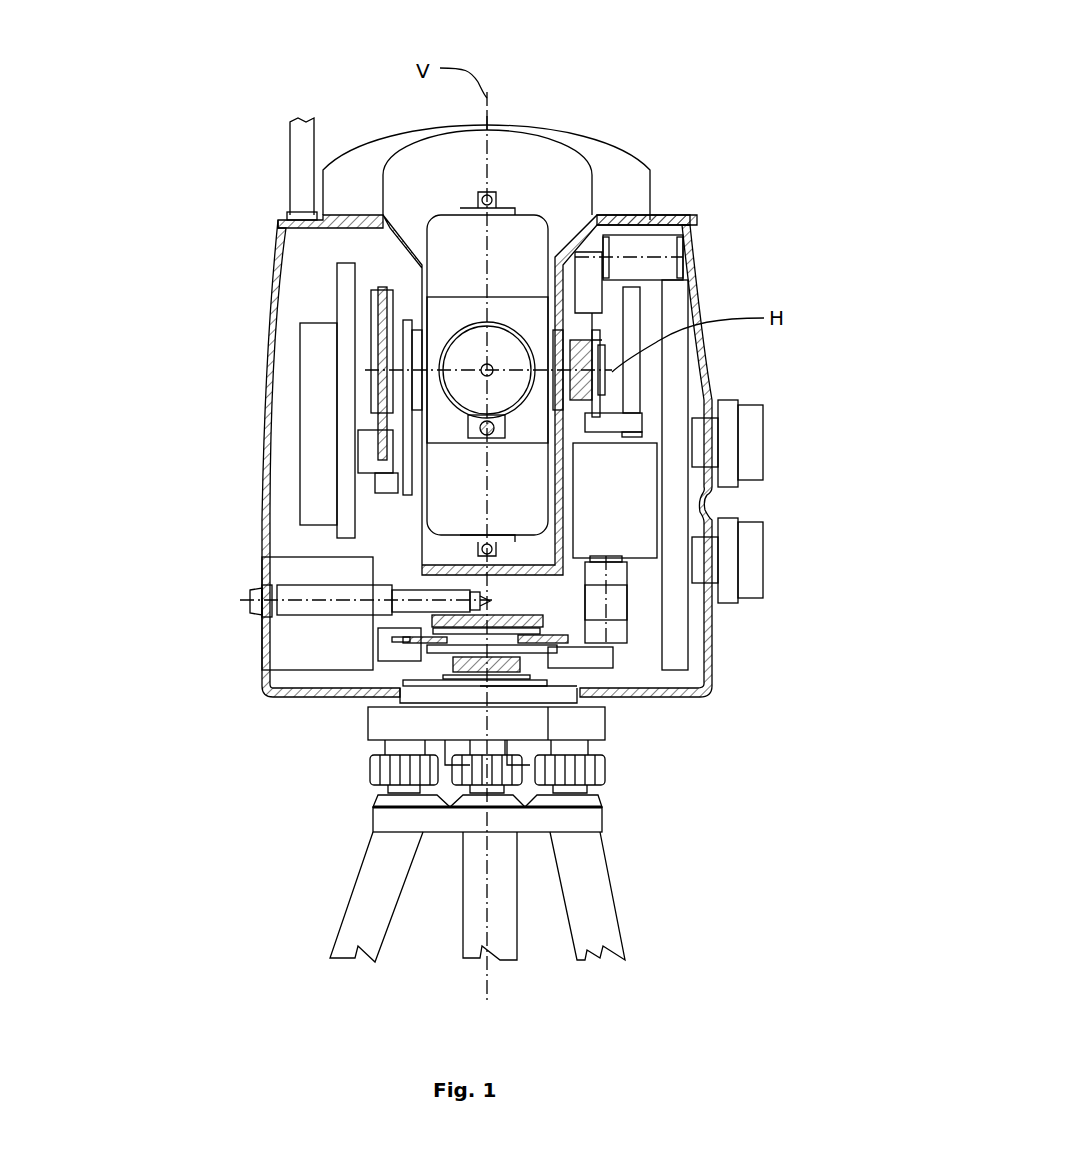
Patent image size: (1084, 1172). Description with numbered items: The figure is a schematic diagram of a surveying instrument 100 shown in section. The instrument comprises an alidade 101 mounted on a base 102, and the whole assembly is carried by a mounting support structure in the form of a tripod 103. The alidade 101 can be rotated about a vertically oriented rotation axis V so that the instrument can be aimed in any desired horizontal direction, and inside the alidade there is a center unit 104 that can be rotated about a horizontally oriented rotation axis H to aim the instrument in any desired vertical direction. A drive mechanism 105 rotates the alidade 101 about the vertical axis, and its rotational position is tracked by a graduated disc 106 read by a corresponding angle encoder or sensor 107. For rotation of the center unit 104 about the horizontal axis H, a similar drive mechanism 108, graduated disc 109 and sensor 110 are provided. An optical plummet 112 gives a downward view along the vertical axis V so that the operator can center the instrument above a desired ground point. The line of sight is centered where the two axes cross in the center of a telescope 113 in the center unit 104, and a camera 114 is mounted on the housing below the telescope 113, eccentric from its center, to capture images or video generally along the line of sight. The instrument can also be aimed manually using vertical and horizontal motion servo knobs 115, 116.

The surveying instrument 100 is at (683, 118).
The alidade 101 is at (712, 698).
The base 102 is at (587, 722).
The tripod 103 is at (585, 878).
The center unit 104 is at (523, 248).
The drive mechanism 105 is at (620, 622).
The graduated disc 106 is at (433, 648).
The angle encoder or sensor 107 is at (385, 655).
The drive mechanism 108 is at (673, 234).
The graduated disc 109 is at (380, 420).
The sensor 110 is at (367, 458).
The optical plummet 112 is at (262, 598).
The telescope 113 is at (458, 360).
The camera 114 is at (440, 363).
The vertical motion servo knob 115 is at (752, 430).
The horizontal motion servo knob 116 is at (752, 545).